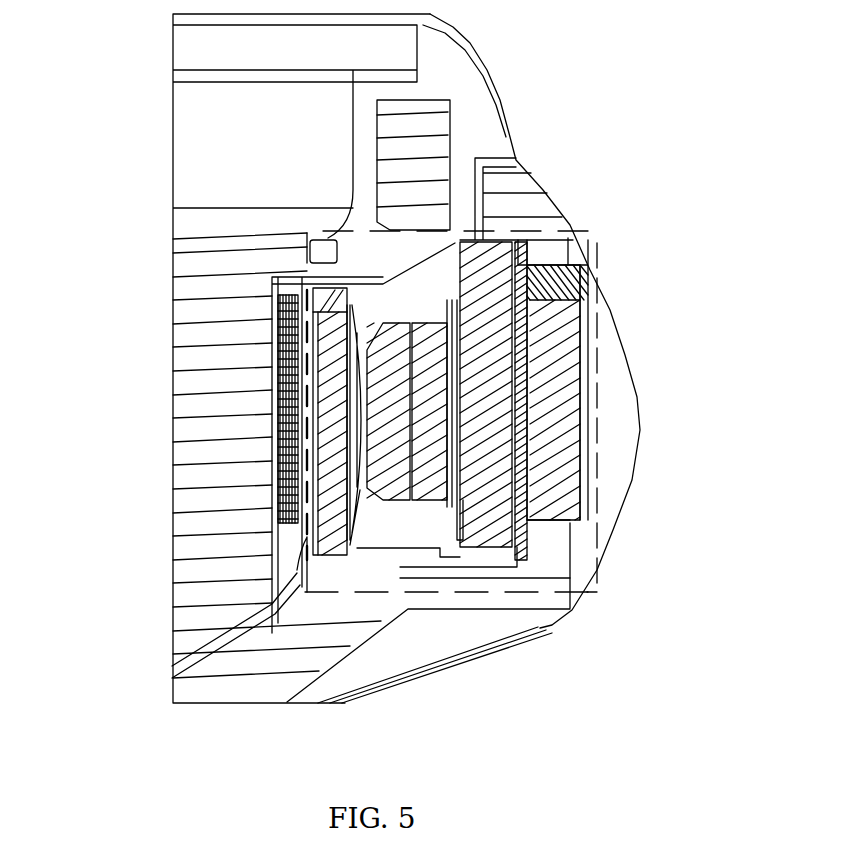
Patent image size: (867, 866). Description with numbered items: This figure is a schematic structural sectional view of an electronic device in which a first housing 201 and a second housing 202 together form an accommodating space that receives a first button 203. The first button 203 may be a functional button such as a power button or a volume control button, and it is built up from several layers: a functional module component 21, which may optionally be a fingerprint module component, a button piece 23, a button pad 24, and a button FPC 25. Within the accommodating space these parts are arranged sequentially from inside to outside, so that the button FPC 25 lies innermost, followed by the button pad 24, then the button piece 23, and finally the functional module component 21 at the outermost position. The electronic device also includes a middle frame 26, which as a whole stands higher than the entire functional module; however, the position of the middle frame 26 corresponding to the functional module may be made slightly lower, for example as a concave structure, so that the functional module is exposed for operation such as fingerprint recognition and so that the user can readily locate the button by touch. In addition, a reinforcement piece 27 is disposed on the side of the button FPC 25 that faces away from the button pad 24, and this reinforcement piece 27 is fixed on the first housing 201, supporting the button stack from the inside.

The first housing 201 is at (195, 300).
The second housing 202 is at (465, 593).
The first button 203 is at (453, 230).
The functional module component 21 is at (487, 302).
The button piece 23 is at (423, 385).
The button pad 24 is at (383, 467).
The button FPC 25 is at (327, 447).
The middle frame 26 is at (603, 482).
The reinforcement piece 27 is at (290, 388).